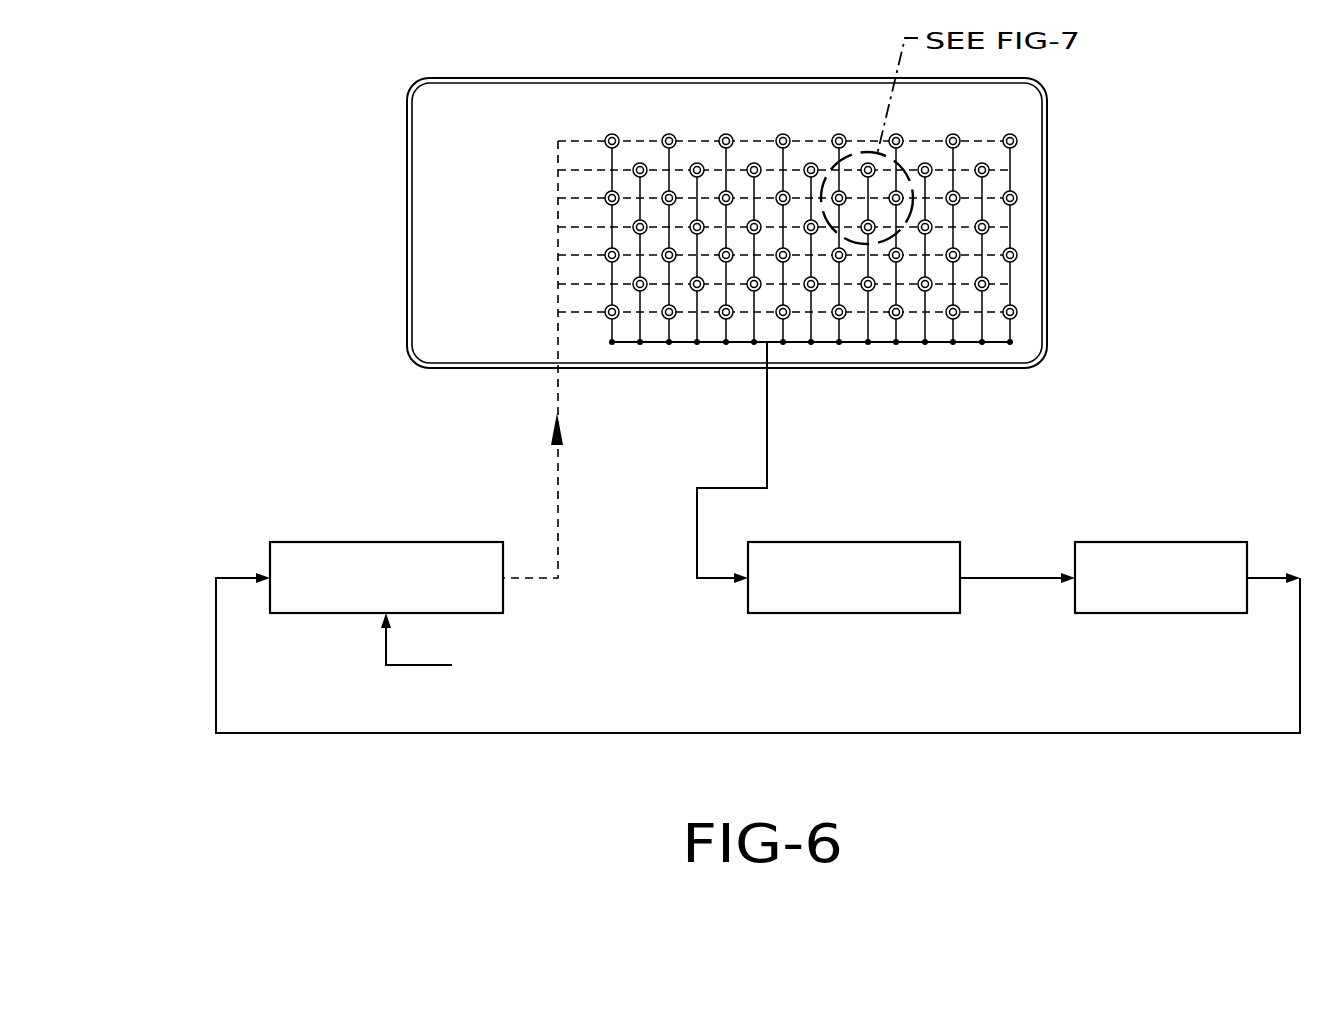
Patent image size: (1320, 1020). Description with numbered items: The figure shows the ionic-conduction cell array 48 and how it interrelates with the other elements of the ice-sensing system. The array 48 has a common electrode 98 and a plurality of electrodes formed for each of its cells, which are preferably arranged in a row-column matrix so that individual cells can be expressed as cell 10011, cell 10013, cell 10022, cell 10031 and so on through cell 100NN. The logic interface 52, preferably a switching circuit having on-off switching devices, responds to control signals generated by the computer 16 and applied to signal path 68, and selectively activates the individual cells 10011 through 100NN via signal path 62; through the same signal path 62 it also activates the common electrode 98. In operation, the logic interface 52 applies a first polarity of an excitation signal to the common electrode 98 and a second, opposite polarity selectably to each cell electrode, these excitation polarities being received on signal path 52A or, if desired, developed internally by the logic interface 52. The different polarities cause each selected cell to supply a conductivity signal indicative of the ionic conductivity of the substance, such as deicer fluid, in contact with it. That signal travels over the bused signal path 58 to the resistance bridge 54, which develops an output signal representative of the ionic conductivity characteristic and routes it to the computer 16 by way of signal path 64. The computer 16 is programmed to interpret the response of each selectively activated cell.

The ionic-conduction cell 10011 is at (612, 134).
The ionic-conduction cell 10022 is at (639, 162).
The ionic-conduction cell 10013 is at (669, 134).
The ionic-conduction cell 10031 is at (606, 195).
The ionic-conduction cell 100NN is at (1016, 307).
The common electrode 98 is at (1028, 114).
The ionic-conduction cell array 48 is at (1048, 172).
The logic interface 52 is at (309, 542).
The signal path 52A is at (418, 668).
The signal path 62 is at (555, 478).
The signal path 58 is at (695, 522).
The resistance bridge 54 is at (860, 542).
The signal path 64 is at (1008, 576).
The computer 16 is at (1152, 542).
The signal path 68 is at (846, 733).